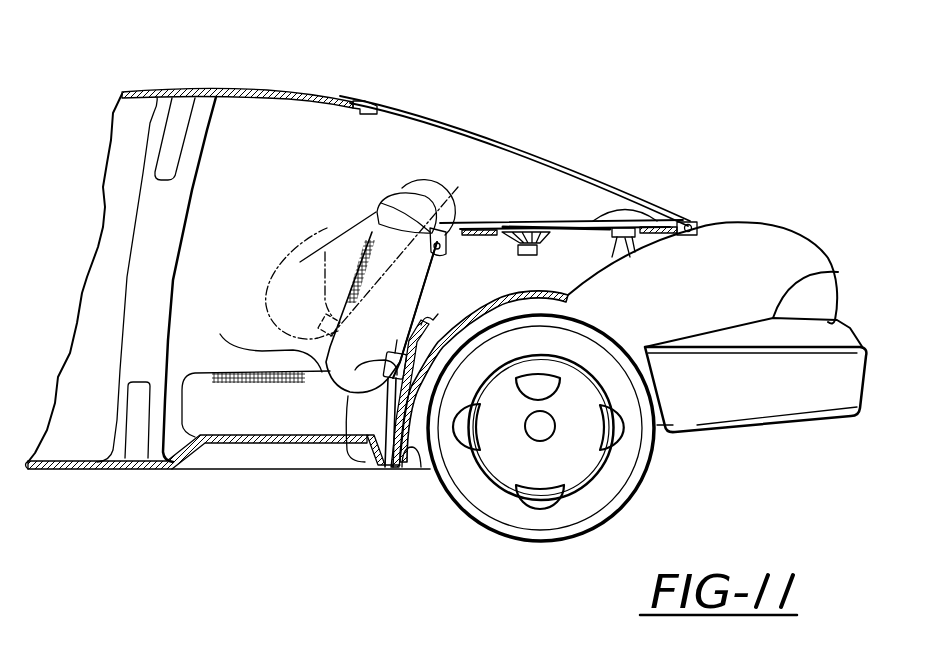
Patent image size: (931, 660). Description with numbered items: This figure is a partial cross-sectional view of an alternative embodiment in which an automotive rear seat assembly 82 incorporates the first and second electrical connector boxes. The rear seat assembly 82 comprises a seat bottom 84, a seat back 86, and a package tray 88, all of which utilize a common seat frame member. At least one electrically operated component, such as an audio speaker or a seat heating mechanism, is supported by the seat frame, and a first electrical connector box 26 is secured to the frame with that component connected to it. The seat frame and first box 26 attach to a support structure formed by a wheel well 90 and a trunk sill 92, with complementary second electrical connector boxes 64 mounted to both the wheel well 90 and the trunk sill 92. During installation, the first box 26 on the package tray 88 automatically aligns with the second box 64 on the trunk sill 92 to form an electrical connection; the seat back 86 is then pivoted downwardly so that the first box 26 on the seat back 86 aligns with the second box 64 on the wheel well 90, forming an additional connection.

The first electrical connector box 26 is at (322, 252).
The second electrical connector box 64 is at (385, 382).
The rear seat assembly 82 is at (257, 340).
The seat bottom 84 is at (293, 417).
The seat back 86 is at (355, 220).
The package tray 88 is at (583, 222).
The wheel well 90 is at (410, 452).
The trunk sill 92 is at (695, 234).